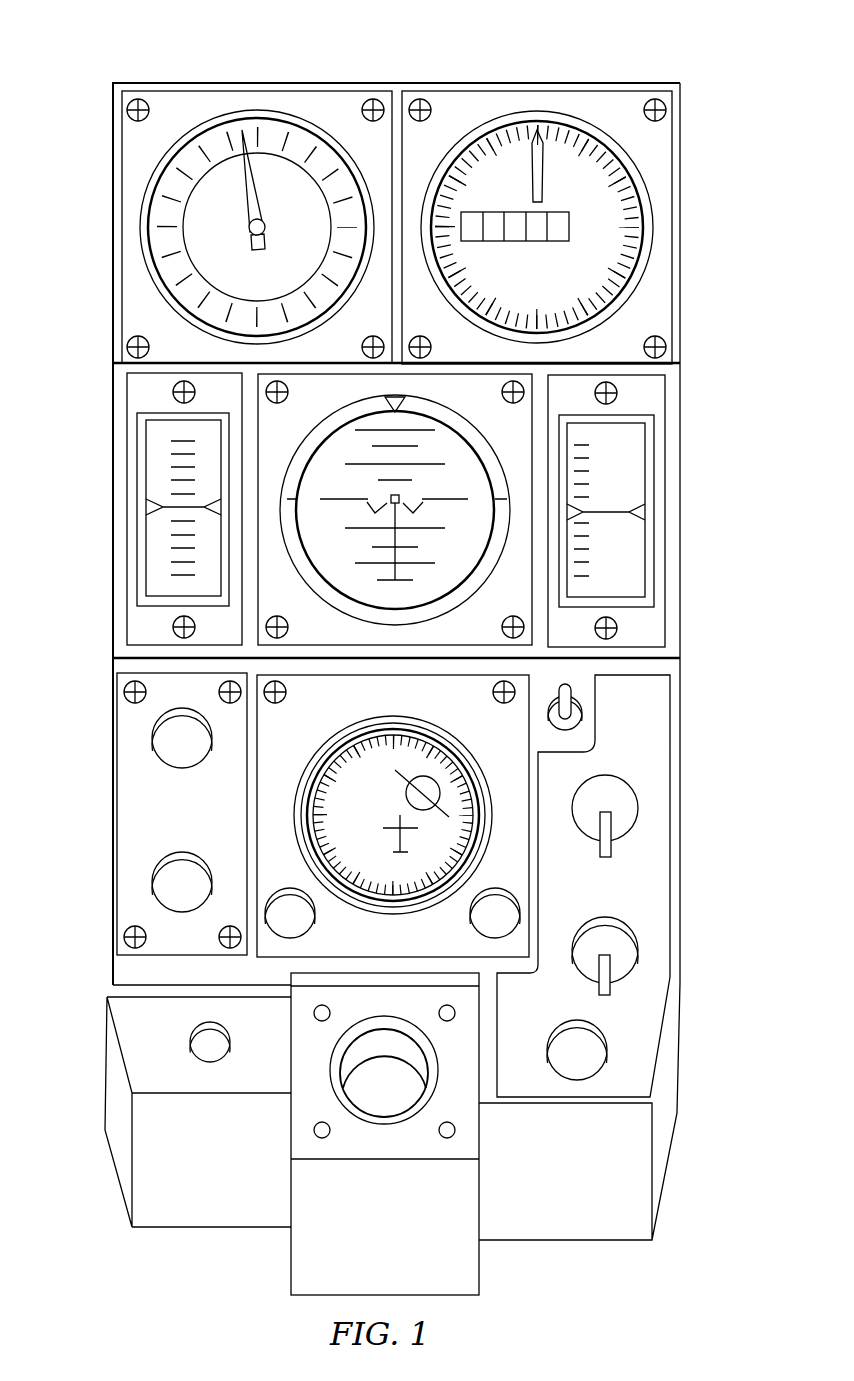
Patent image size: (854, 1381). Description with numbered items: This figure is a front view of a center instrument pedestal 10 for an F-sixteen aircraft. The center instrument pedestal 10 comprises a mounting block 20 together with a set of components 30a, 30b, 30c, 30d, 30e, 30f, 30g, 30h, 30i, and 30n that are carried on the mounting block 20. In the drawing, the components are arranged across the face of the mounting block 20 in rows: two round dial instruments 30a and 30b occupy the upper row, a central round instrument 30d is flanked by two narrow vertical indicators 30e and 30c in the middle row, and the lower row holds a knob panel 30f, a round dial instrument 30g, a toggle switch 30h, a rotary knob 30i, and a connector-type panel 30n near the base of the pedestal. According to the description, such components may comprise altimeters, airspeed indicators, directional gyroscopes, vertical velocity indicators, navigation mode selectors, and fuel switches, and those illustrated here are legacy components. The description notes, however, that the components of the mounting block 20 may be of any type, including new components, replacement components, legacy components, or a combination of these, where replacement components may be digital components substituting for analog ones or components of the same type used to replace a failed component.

The center instrument pedestal 10 is at (247, 58).
The mounting block 20 is at (106, 393).
The component 30a is at (137, 153).
The component 30b is at (658, 157).
The component 30c is at (647, 628).
The component 30d is at (329, 629).
The component 30e is at (142, 625).
The component 30f is at (143, 788).
The component 30g is at (512, 872).
The component 30h is at (580, 708).
The component 30i is at (615, 773).
The component 30n is at (428, 1097).